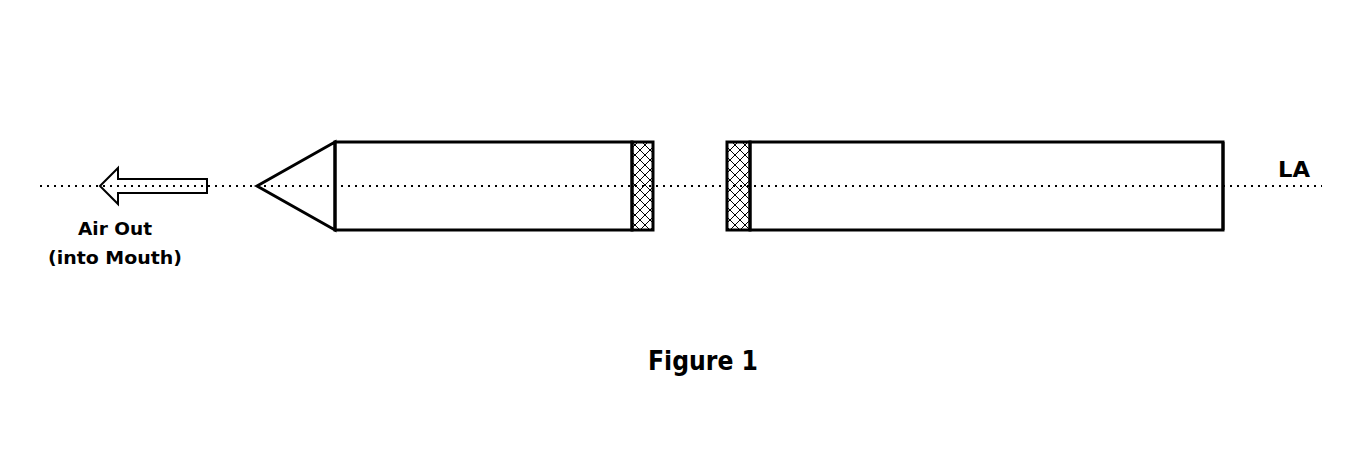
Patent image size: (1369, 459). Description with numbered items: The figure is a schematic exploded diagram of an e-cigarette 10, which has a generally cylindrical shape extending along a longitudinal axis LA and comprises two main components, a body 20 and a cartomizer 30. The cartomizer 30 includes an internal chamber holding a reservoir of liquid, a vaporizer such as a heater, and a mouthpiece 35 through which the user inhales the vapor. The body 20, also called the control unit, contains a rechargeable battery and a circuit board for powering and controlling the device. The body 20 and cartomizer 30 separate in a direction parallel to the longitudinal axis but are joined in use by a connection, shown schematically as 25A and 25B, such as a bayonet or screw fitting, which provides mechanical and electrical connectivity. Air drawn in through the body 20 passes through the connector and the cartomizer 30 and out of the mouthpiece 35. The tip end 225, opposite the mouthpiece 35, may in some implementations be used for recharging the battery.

The e-cigarette 10 is at (326, 304).
The body 20 is at (855, 253).
The connection 25A is at (643, 231).
The connection 25B is at (745, 141).
The cartomizer 30 is at (482, 141).
The mouthpiece 35 is at (308, 186).
The tip end 225 is at (1233, 206).